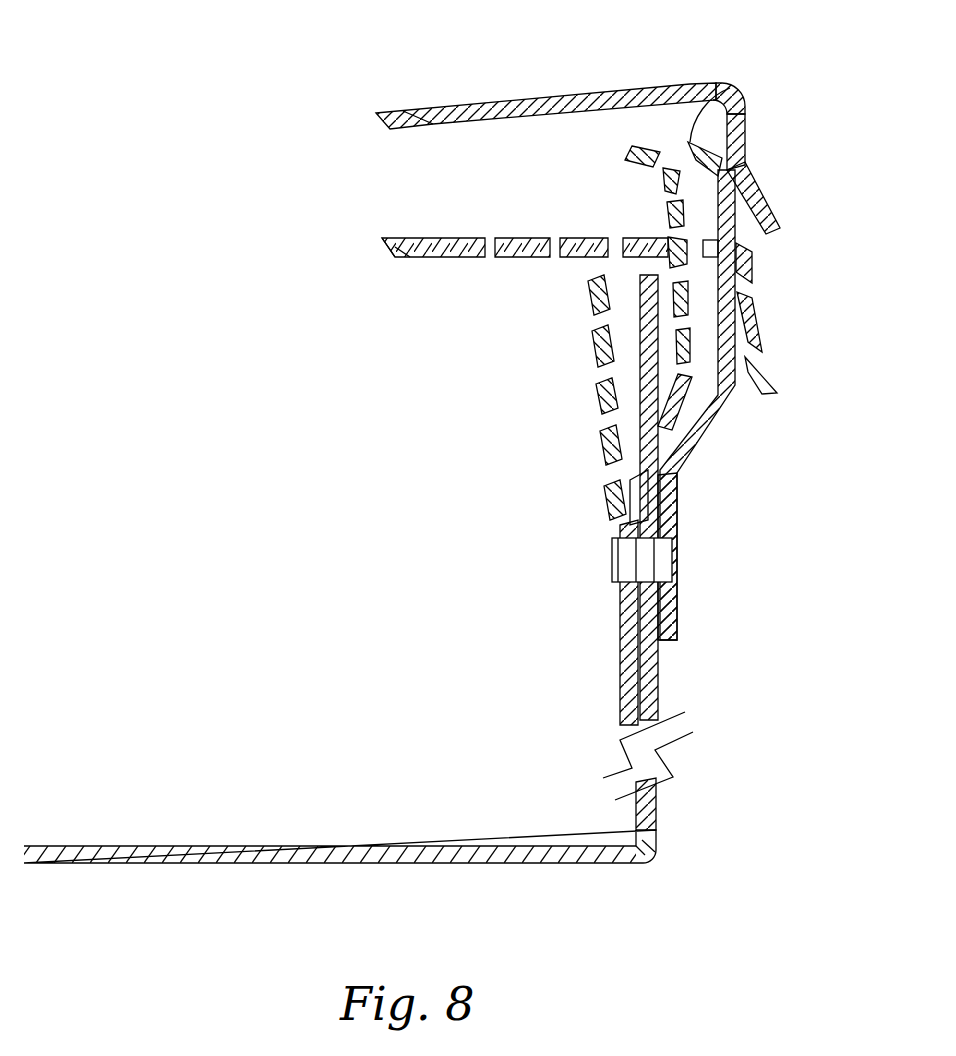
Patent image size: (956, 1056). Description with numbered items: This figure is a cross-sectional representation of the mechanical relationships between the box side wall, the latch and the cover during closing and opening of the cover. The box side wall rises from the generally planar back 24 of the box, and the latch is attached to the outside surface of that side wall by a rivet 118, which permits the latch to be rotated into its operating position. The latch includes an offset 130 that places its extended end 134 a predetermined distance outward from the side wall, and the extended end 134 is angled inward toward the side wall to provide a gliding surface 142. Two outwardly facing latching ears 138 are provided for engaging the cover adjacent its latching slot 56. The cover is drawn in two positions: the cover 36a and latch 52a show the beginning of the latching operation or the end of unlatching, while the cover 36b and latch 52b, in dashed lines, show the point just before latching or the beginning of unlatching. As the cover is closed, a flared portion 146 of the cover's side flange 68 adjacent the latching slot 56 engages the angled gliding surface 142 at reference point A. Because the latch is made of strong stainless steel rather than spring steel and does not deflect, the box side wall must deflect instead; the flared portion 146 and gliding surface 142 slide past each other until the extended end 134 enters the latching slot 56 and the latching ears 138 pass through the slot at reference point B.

The cover 36a is at (491, 97).
The cover 36b is at (522, 236).
The latching slot 56 is at (713, 83).
The extended end 134 is at (730, 97).
The first side flange 68 is at (748, 117).
The gliding surface 142 is at (716, 156).
The flared portion 146 is at (772, 212).
The latching ears 138 is at (668, 224).
The offset 130 is at (708, 428).
The latch 52b is at (640, 298).
The latch 52a is at (682, 491).
The rivet 118 is at (680, 538).
The back 24 is at (422, 864).
The reference point A is at (712, 150).
The reference point B is at (693, 247).